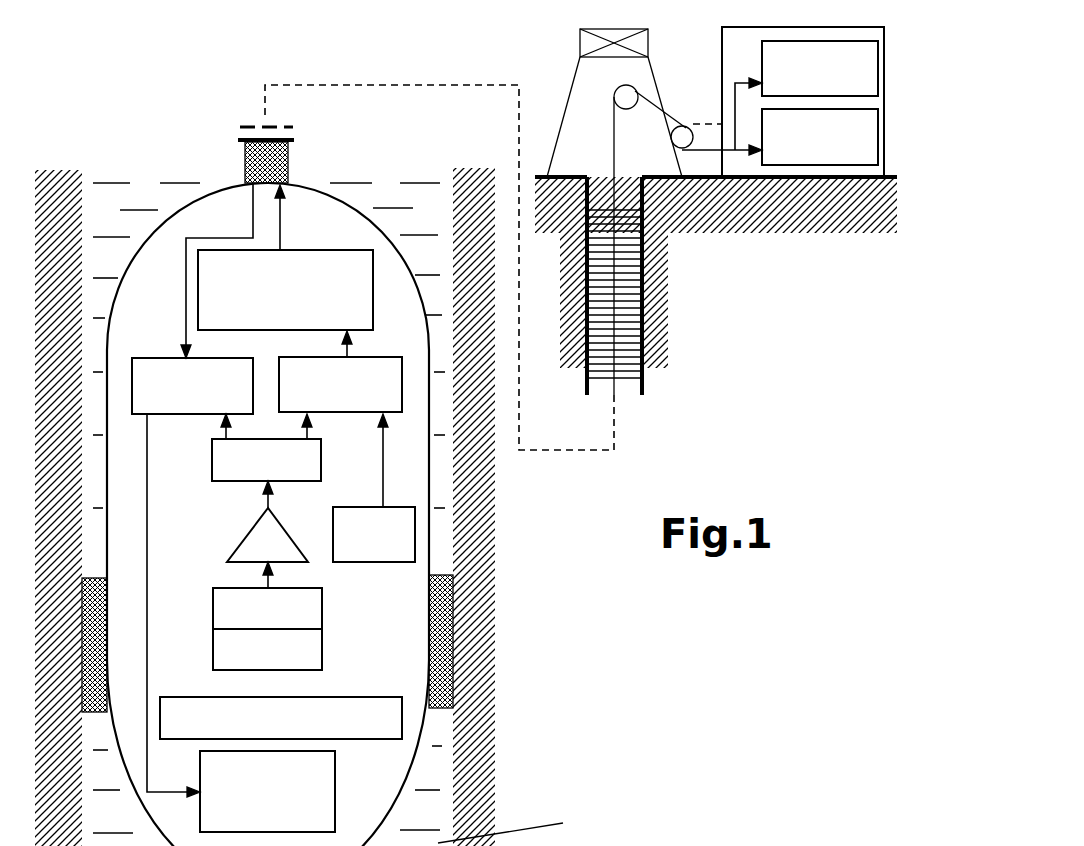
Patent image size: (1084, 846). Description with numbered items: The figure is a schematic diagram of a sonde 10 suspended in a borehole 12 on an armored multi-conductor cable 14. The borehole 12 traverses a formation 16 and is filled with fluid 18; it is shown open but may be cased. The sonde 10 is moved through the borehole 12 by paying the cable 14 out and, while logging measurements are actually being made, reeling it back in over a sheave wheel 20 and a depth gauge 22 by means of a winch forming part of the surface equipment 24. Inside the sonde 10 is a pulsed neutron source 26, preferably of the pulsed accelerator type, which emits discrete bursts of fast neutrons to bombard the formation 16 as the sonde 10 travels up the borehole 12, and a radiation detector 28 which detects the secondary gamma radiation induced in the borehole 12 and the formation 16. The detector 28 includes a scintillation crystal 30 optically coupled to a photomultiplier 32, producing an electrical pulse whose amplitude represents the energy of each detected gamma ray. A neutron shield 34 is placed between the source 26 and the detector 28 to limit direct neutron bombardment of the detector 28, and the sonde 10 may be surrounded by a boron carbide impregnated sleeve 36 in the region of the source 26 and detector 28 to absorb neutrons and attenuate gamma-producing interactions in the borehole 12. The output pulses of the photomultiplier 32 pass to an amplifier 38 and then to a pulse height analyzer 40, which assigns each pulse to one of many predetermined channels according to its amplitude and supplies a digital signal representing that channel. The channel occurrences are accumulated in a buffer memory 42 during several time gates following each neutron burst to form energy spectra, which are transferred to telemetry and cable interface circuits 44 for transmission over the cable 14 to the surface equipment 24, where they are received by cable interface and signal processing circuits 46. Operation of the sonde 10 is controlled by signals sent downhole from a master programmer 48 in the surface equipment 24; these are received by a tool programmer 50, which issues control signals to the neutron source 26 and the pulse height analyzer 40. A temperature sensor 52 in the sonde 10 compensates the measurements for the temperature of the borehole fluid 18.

The sonde 10 is at (428, 535).
The borehole 12 is at (428, 806).
The armored multi-conductor cable 14 is at (247, 162).
The formation 16 is at (470, 692).
The fluid 18 is at (522, 826).
The sheave wheel 20 is at (623, 93).
The depth gauge 22 is at (681, 134).
The surface equipment 24 is at (743, 178).
The pulsed neutron source 26 is at (325, 788).
The radiation detector 28 is at (285, 615).
The scintillation crystal 30 is at (313, 650).
The photomultiplier 32 is at (303, 613).
The neutron shield 34 is at (216, 708).
The boron carbide impregnated sleeve 36 is at (437, 622).
The amplifier 38 is at (262, 540).
The pulse height analyzer 40 is at (228, 466).
The buffer memory 42 is at (355, 405).
The telemetry and cable interface circuits 44 is at (363, 259).
The cable interface and signal processing circuits 46 is at (857, 155).
The master programmer 48 is at (760, 73).
The tool programmer 50 is at (161, 370).
The temperature sensor 52 is at (403, 515).